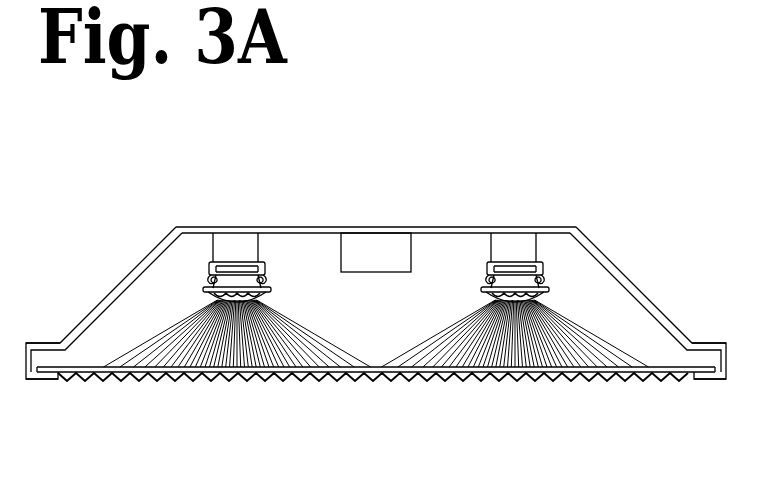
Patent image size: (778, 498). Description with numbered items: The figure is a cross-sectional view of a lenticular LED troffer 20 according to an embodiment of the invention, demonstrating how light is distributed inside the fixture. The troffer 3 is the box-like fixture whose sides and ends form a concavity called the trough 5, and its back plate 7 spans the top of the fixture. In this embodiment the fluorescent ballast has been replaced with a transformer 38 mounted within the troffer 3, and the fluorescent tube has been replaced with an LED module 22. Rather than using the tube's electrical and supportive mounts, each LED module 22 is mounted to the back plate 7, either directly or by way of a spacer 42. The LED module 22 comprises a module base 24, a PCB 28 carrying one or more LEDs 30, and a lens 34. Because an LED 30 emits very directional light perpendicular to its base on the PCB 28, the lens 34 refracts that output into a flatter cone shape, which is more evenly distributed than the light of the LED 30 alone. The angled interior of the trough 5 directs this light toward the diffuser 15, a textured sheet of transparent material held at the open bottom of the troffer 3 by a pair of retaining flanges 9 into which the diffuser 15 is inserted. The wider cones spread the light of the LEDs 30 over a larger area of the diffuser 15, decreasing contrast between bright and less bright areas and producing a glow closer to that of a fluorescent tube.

The luminaire assembly 20 is at (330, 204).
The back plate 7 is at (300, 231).
The troffer 3 is at (435, 233).
The LED module 22 is at (182, 278).
The trough 5 is at (300, 280).
The retaining flanges 9 is at (50, 380).
The diffuser 15 is at (260, 376).
The transformer 38 is at (357, 257).
The spacer 42 is at (248, 243).
The PCB 28 is at (220, 263).
The LEDs 30 is at (213, 278).
The module base 24 is at (240, 287).
The lens 34 is at (130, 364).